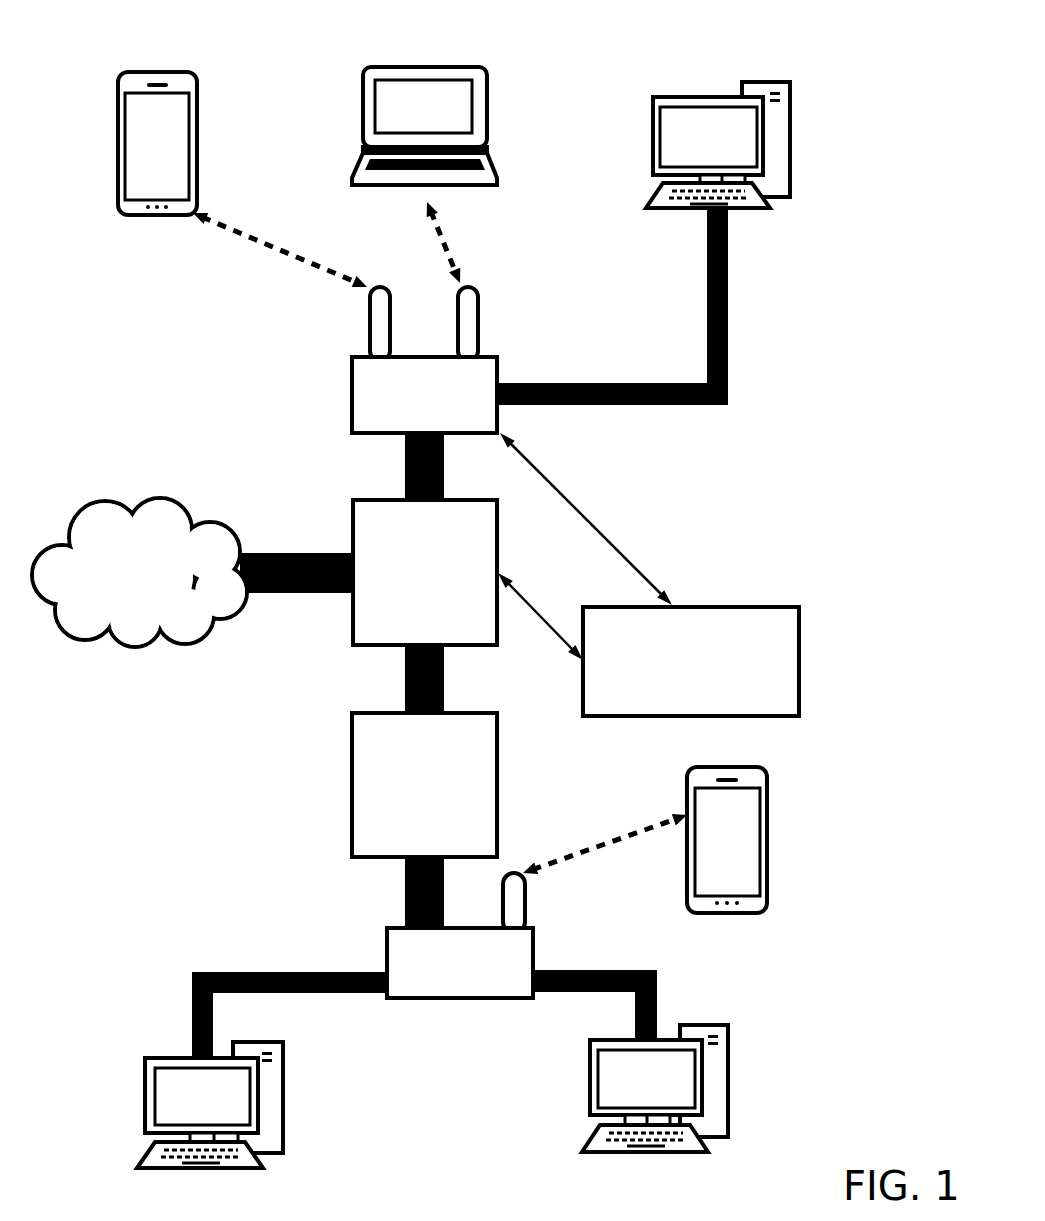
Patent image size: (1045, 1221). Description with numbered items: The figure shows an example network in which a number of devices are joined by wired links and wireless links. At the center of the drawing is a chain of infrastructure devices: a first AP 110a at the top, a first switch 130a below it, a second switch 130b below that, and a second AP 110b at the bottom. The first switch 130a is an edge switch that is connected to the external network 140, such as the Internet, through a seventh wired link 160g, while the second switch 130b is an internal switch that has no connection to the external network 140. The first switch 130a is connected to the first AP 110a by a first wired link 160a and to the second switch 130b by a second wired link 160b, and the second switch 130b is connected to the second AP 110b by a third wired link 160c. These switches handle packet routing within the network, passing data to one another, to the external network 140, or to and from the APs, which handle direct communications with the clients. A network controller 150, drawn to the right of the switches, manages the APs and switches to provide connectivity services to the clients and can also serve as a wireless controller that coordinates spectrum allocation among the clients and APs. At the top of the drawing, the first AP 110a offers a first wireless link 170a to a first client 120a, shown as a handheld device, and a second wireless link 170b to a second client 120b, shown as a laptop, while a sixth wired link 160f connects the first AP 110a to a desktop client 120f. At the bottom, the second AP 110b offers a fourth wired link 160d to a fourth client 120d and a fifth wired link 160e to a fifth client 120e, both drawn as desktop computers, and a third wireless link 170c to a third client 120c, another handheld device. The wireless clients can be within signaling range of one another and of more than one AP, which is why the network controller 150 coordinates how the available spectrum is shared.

The first AP 110a is at (403, 405).
The second AP 110b is at (438, 975).
The first client 120a is at (197, 108).
The second client 120b is at (487, 105).
The third client 120c is at (767, 795).
The fourth client 120d is at (283, 1068).
The fifth client 120e is at (728, 1060).
The client 120f is at (790, 122).
The first switch 130a is at (404, 597).
The second switch 130b is at (404, 811).
The external network 140 is at (124, 596).
The network controller 150 is at (675, 686).
The first wired link 160a is at (405, 468).
The second wired link 160b is at (405, 673).
The third wired link 160c is at (405, 894).
The fourth wired link 160d is at (204, 968).
The fifth wired link 160e is at (585, 976).
The sixth wired link 160f is at (728, 302).
The seventh wired link 160g is at (292, 596).
The first wireless link 170a is at (281, 250).
The second wireless link 170b is at (444, 254).
The third wireless link 170c is at (624, 840).